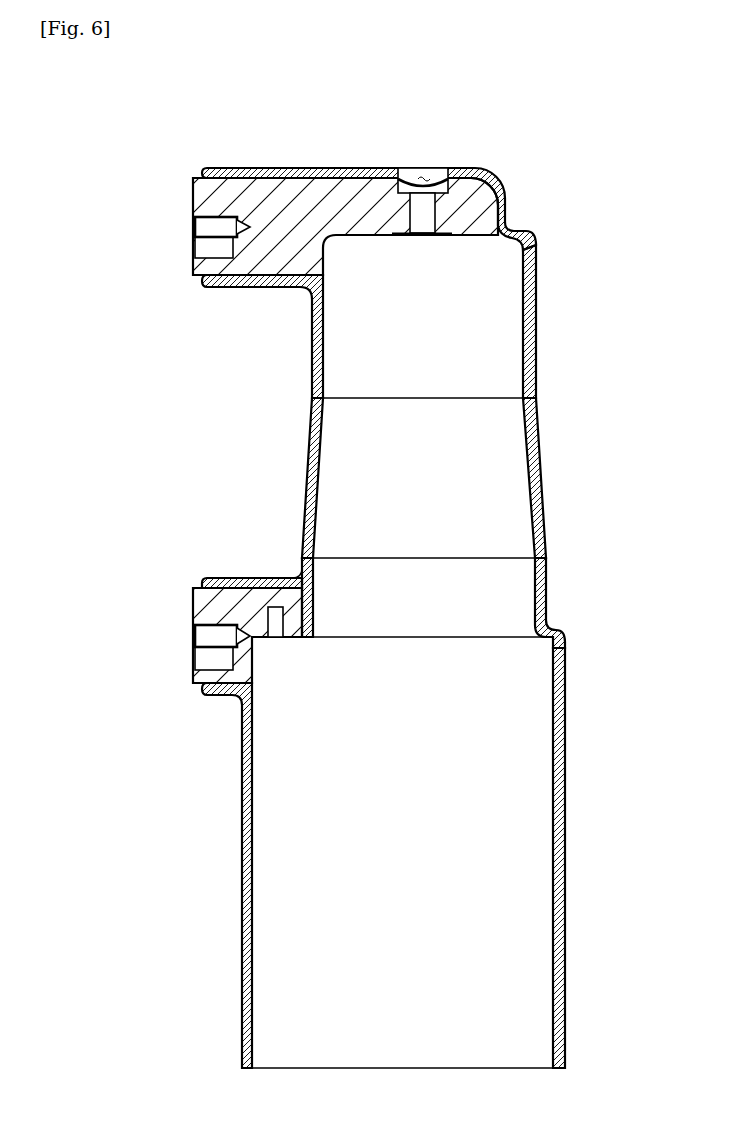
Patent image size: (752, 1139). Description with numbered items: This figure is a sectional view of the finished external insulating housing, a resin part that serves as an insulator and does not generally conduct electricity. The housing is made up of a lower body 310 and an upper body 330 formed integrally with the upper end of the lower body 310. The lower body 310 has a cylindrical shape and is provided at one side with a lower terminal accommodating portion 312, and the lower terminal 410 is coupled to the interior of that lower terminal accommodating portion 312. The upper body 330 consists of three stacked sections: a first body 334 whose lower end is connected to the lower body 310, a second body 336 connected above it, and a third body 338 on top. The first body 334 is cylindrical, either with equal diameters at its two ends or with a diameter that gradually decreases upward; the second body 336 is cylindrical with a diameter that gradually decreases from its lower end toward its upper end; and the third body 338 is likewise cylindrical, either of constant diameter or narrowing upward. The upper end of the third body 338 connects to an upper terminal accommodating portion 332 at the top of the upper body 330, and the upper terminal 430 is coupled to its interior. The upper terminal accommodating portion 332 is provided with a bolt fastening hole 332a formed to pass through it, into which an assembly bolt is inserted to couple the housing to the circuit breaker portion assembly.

The lower body 310 is at (565, 843).
The lower terminal accommodating portion 312 is at (218, 578).
The upper body 330 is at (452, 408).
The upper terminal accommodating portion 332 is at (500, 178).
The bolt fastening hole 332a is at (423, 170).
The first body 334 is at (469, 603).
The second body 336 is at (543, 467).
The third body 338 is at (538, 310).
The lower terminal 410 is at (212, 607).
The upper terminal 430 is at (212, 200).